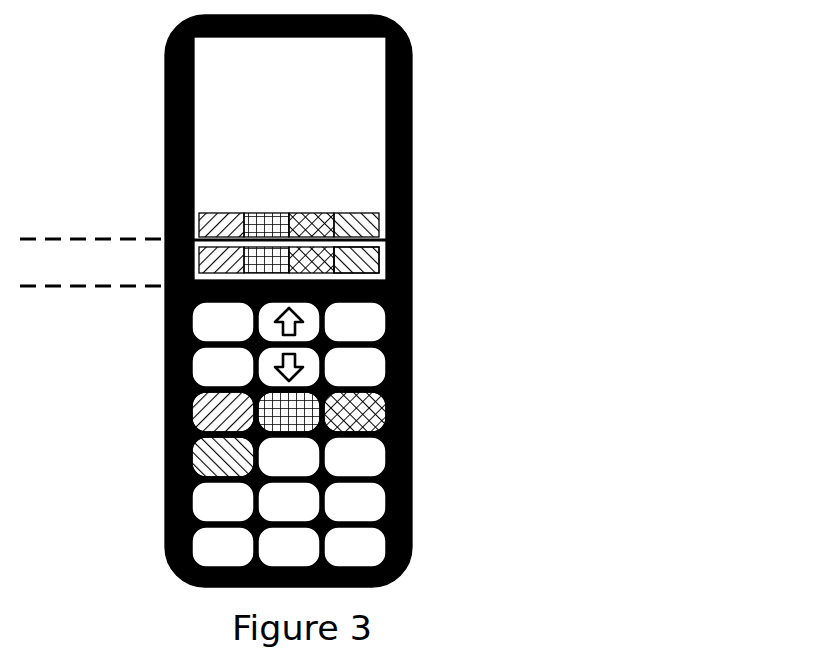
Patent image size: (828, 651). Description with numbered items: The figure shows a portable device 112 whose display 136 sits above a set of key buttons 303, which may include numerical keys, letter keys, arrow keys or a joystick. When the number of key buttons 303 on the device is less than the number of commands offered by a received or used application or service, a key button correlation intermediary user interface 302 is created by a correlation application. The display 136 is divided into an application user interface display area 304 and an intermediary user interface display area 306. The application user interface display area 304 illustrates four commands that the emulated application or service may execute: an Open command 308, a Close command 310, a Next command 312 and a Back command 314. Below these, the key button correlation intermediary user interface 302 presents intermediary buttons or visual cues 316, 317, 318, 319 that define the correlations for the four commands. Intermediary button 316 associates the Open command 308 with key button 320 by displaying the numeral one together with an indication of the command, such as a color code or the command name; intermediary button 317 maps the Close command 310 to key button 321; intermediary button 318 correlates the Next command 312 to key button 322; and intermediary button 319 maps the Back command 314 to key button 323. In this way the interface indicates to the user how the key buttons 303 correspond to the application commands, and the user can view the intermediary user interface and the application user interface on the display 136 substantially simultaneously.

The portable device 112 is at (168, 557).
The display 136 is at (325, 127).
The key button correlation intermediary user interface 302 is at (274, 292).
The key buttons 303 is at (262, 434).
The application user interface display area 304 is at (217, 207).
The intermediary user interface display area 306 is at (379, 262).
The Open command 308 is at (223, 212).
The Close command 310 is at (268, 212).
The Next command 312 is at (332, 195).
The Back command 314 is at (373, 198).
The intermediary button 316 is at (222, 273).
The intermediary button 317 is at (265, 273).
The intermediary button 318 is at (350, 273).
The intermediary button 319 is at (310, 273).
The key button 1 320 is at (192, 412).
The key button 2 321 is at (313, 388).
The key button 3 322 is at (387, 412).
The key button 4 323 is at (192, 460).